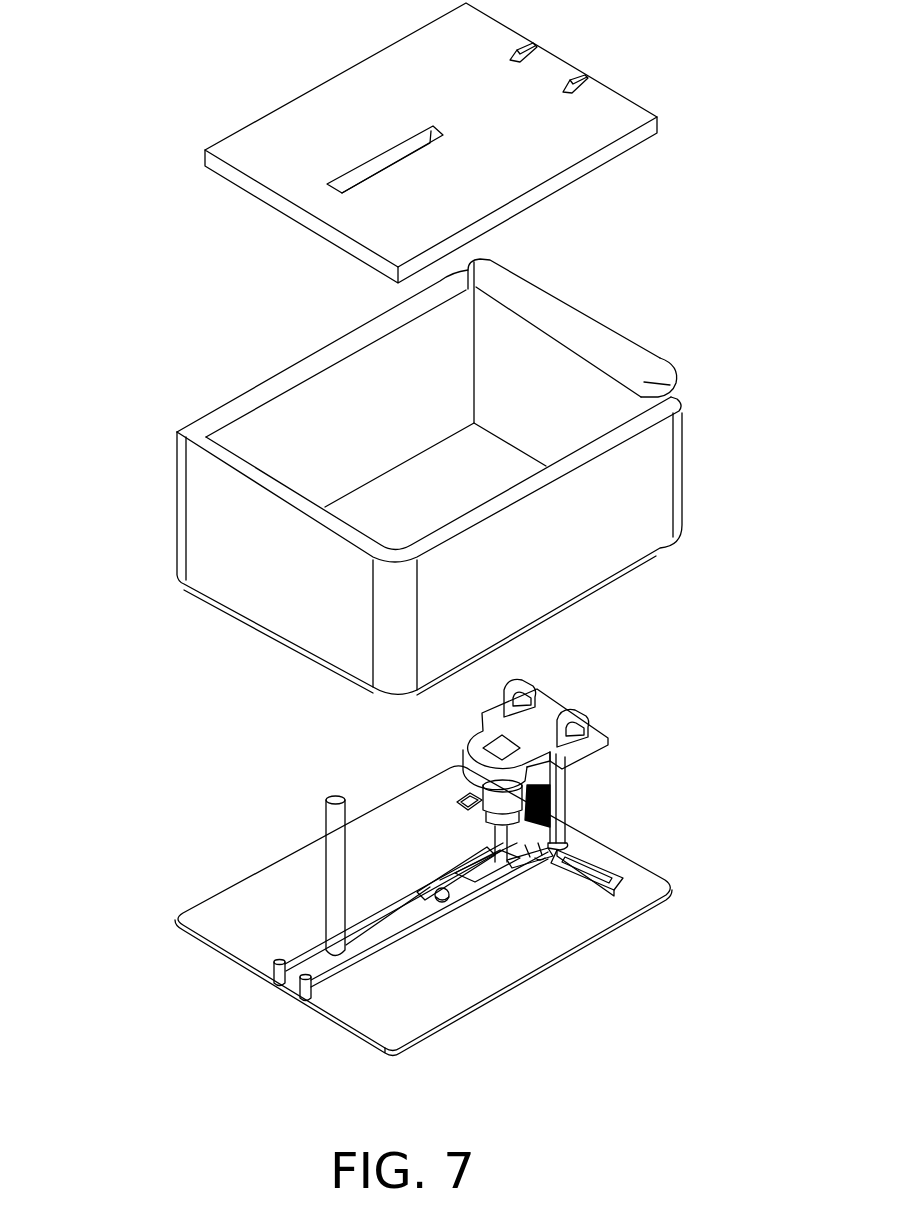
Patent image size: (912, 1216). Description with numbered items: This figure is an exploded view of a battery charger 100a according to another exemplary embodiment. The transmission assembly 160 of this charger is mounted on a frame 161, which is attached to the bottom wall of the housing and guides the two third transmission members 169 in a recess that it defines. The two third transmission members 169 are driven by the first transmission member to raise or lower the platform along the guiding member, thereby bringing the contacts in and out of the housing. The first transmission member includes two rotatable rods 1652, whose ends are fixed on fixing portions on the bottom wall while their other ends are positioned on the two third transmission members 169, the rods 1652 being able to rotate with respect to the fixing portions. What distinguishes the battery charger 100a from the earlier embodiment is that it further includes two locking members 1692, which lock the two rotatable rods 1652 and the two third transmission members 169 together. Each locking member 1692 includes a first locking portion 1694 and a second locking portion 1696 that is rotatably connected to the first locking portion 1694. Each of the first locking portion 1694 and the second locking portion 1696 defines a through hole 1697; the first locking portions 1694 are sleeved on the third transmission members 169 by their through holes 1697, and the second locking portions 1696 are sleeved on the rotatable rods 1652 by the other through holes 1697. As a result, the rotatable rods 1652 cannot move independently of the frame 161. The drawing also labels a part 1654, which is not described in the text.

The battery charger 100a is at (158, 64).
The transmission assembly 160 is at (646, 778).
The frame 161 is at (627, 868).
The third transmission member 169 is at (557, 788).
The through hole 1697 is at (572, 832).
The sliding block 1654 is at (567, 846).
The locking member 1692 is at (712, 958).
The first locking portion 1694 is at (542, 848).
The second locking portion 1696 is at (543, 862).
The rotatable rod 1652 is at (427, 927).